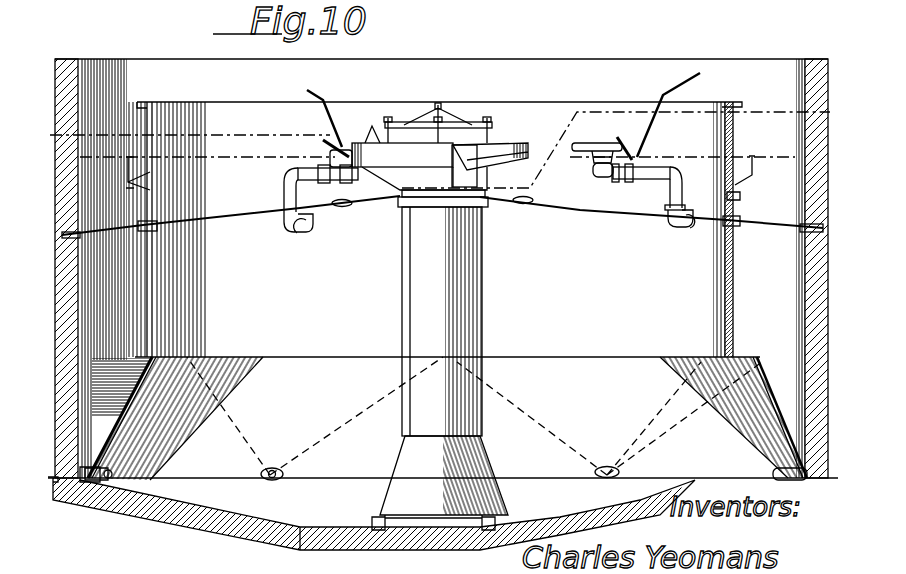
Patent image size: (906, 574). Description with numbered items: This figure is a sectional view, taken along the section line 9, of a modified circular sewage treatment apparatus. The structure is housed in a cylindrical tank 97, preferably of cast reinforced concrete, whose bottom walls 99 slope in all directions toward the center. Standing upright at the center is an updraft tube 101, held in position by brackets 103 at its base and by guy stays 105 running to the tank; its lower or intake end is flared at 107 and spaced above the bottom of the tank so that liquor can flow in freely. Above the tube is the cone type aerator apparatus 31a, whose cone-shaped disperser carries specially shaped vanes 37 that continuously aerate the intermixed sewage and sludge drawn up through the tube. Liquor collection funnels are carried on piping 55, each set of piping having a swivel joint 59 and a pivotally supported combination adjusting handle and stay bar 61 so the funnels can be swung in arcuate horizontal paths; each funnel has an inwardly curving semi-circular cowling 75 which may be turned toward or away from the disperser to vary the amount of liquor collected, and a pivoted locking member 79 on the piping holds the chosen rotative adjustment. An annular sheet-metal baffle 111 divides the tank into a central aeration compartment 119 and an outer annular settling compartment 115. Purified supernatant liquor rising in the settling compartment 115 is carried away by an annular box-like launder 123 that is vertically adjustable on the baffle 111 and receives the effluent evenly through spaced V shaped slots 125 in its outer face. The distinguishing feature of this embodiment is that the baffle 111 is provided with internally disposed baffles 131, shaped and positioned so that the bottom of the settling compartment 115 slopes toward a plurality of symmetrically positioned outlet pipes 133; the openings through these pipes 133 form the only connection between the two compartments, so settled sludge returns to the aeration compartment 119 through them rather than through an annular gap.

The section line 9 is at (52, 113).
The cone type aerator apparatus 31a is at (533, 133).
The vanes 37 is at (531, 137).
The piping 55 is at (661, 150).
The swivel joint 59 is at (313, 214).
The combination adjusting handle and stay bar 61 is at (333, 116).
The cowling 75 is at (595, 145).
The pivoted locking member 79 is at (333, 152).
The cylindrical tank 97 is at (69, 59).
The bottom walls 99 is at (281, 512).
The updraft tube 101 is at (475, 280).
The brackets 103 is at (380, 520).
The guy stays 105 is at (571, 207).
The flared intake end 107 is at (488, 458).
The annular baffle 111 is at (728, 288).
The settling compartment 115 is at (128, 265).
The aeration compartment 119 is at (588, 300).
The launder 123 is at (150, 172).
The V shaped slots 125 is at (138, 160).
The internal baffles 131 is at (115, 407).
The outlet pipes 133 is at (98, 483).